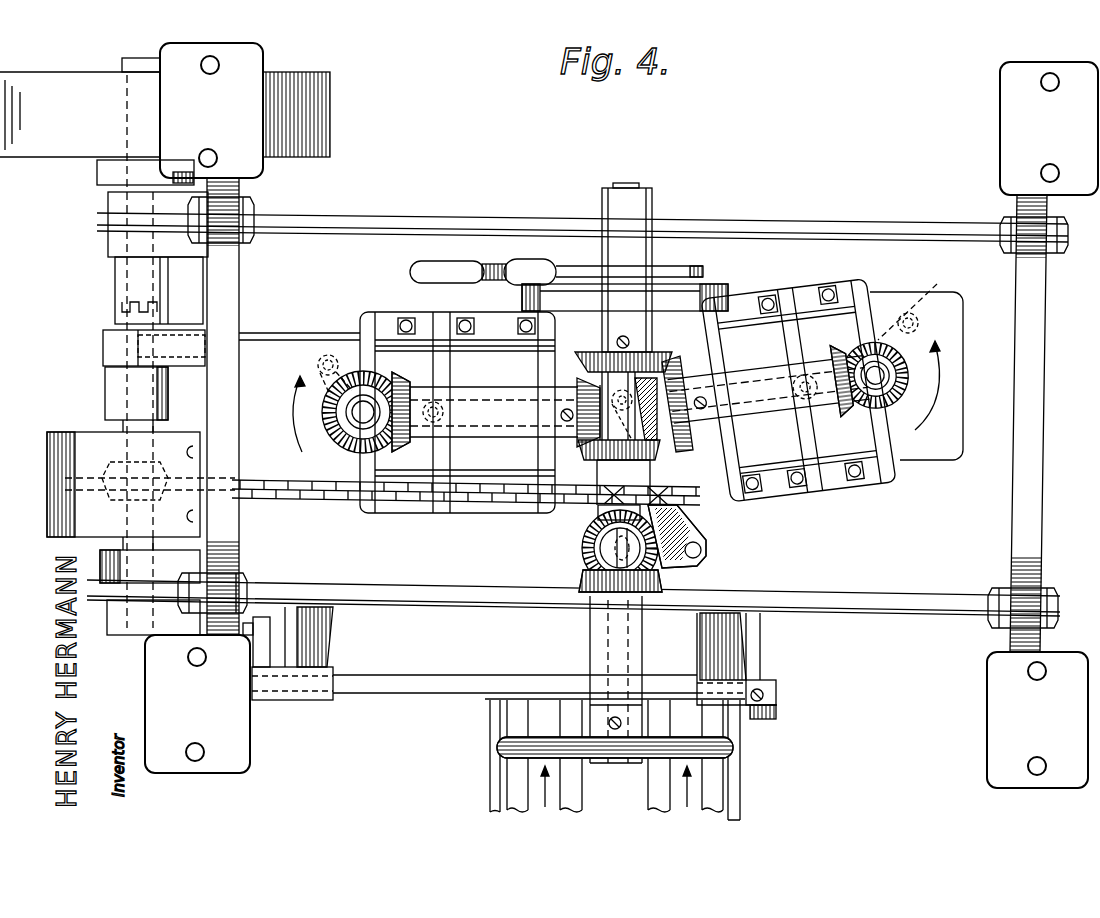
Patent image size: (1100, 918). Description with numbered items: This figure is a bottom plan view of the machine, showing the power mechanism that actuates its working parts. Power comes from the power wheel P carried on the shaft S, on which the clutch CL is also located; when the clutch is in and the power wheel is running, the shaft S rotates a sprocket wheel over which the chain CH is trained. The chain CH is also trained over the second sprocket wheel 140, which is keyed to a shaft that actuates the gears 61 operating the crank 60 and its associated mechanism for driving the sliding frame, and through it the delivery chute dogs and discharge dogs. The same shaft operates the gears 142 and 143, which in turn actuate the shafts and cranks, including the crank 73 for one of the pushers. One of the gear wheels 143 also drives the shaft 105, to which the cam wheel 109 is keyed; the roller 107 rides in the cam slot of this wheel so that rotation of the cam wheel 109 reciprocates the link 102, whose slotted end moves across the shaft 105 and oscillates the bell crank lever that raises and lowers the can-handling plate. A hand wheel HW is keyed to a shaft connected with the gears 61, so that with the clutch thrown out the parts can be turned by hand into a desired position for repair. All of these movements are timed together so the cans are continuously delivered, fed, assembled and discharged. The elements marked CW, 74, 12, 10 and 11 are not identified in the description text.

The power wheel P is at (317, 102).
The shaft S is at (138, 185).
The clutch CL is at (120, 303).
The counterweight CW is at (65, 490).
The chain CH is at (326, 497).
The hand wheel HW is at (733, 750).
The shaft 105 is at (632, 187).
The link 102 is at (433, 267).
The roller 107 is at (545, 272).
The cam wheel 109 is at (727, 267).
The crank 73 is at (340, 331).
The right gear 74 is at (808, 388).
The gear 143 is at (652, 356).
The gear 142 is at (583, 445).
The second sprocket wheel 140 is at (600, 507).
The crank 60 is at (693, 525).
The gears 61 is at (587, 582).
The frame bar 12 is at (497, 708).
The frame member 10 is at (518, 780).
The frame member 11 is at (645, 777).